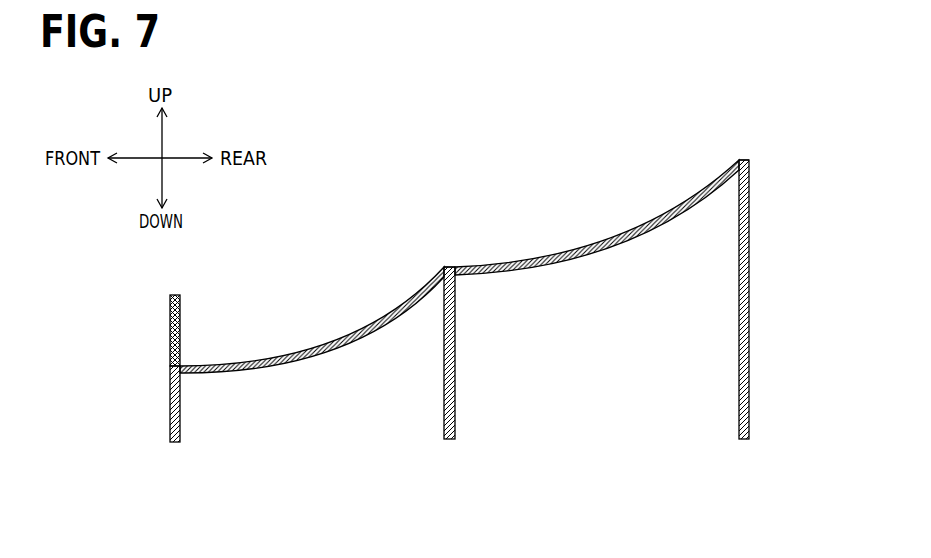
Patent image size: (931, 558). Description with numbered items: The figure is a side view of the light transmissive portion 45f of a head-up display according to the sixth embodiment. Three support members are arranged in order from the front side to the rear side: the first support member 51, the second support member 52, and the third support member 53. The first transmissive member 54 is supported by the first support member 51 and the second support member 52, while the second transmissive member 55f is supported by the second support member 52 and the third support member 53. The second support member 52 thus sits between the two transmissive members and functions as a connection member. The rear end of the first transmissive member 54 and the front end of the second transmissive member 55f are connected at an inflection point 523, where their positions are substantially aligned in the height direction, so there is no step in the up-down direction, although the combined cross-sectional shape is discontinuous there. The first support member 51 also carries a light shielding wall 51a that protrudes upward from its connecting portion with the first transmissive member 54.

The light shielding wall 51a is at (172, 330).
The first support member 51 is at (182, 422).
The first transmissive member 54 is at (357, 340).
The second support member 52 is at (456, 394).
The inflection point 523 is at (447, 265).
The second transmissive member 55f is at (633, 240).
The third support member 53 is at (750, 279).
The light transmissive portion 45f is at (775, 146).